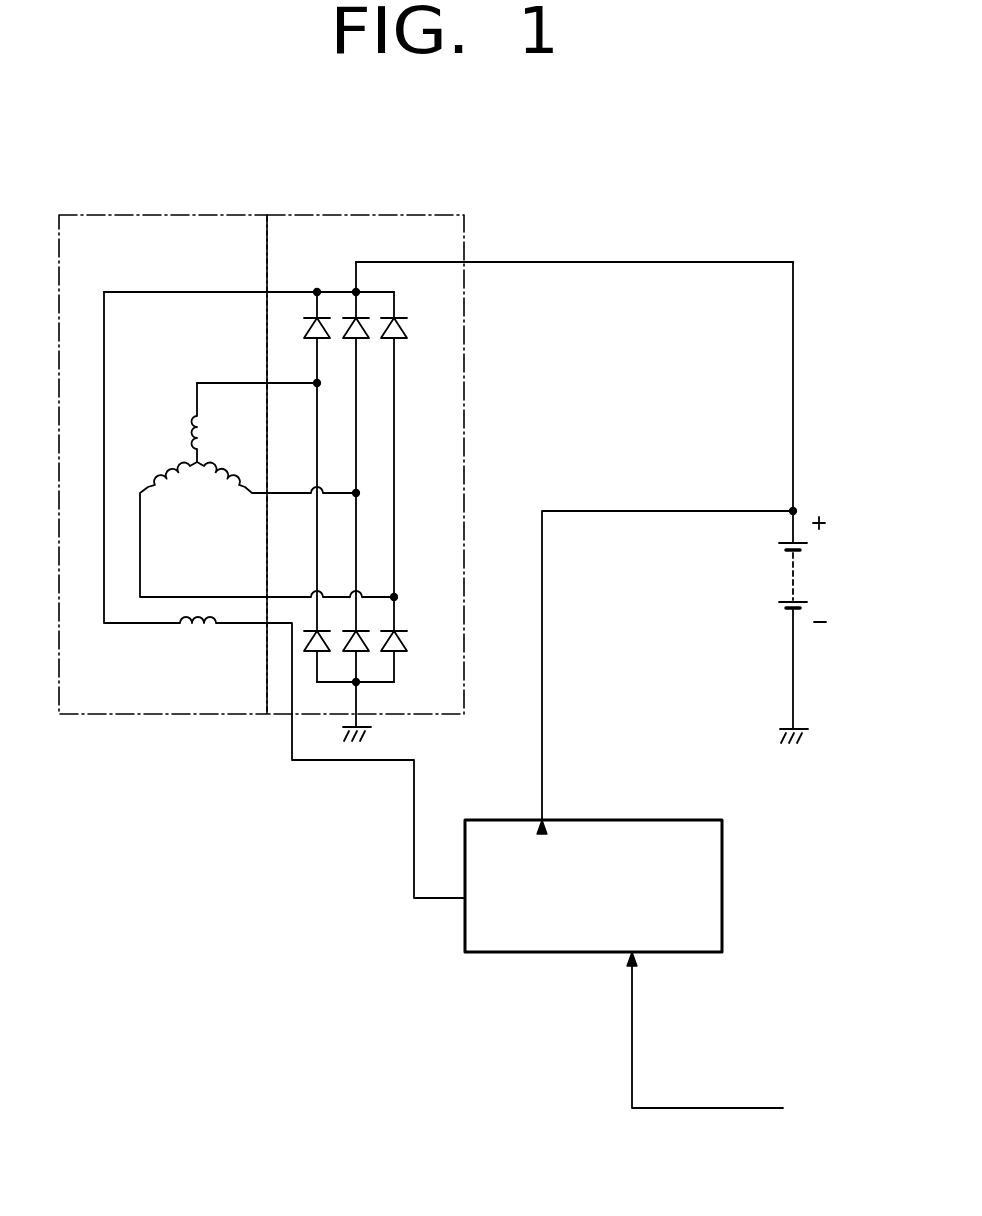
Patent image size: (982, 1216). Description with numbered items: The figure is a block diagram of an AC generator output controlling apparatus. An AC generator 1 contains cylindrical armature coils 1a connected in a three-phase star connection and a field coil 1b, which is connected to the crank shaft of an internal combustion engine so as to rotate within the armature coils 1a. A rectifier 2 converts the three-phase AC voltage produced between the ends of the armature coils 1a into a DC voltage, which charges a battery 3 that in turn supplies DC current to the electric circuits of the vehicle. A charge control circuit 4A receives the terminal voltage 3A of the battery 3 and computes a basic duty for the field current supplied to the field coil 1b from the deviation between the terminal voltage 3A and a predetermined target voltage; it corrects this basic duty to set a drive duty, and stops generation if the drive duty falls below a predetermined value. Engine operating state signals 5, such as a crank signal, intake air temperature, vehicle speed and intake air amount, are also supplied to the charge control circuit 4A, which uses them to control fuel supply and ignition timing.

The AC generator 1 is at (147, 215).
The armature coils 1a is at (197, 448).
The field coil 1b is at (196, 632).
The rectifier 2 is at (330, 215).
The battery 3 is at (802, 597).
The terminal voltage 3A is at (542, 663).
The charge control circuit 4A is at (722, 878).
The engine operating state signals 5 is at (632, 1033).